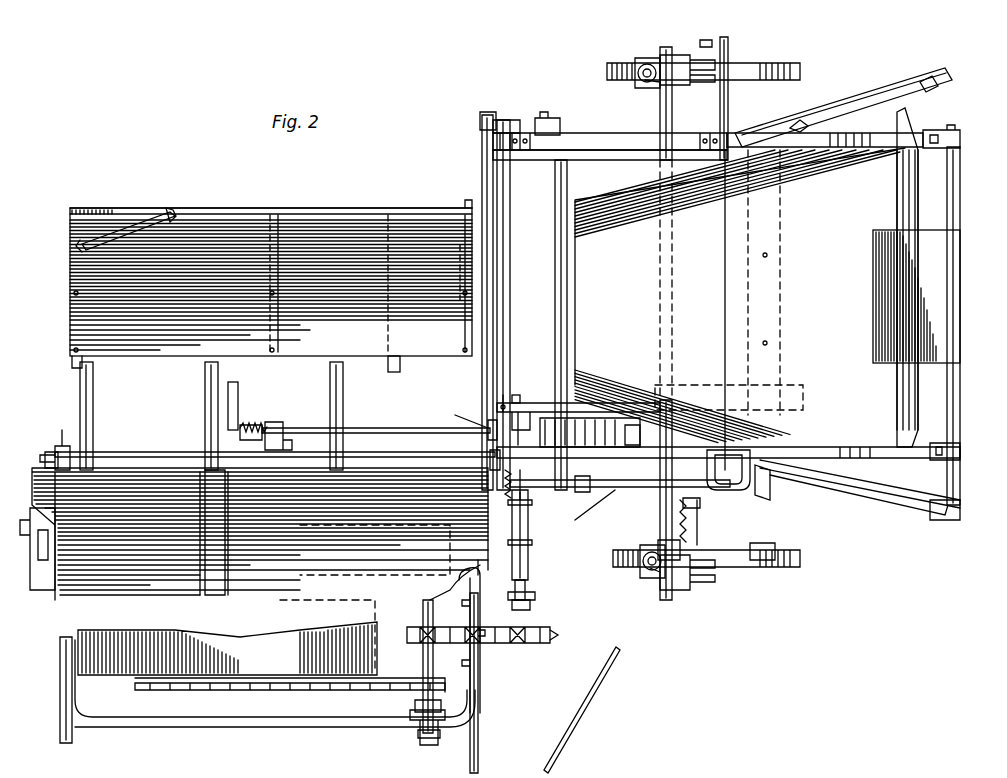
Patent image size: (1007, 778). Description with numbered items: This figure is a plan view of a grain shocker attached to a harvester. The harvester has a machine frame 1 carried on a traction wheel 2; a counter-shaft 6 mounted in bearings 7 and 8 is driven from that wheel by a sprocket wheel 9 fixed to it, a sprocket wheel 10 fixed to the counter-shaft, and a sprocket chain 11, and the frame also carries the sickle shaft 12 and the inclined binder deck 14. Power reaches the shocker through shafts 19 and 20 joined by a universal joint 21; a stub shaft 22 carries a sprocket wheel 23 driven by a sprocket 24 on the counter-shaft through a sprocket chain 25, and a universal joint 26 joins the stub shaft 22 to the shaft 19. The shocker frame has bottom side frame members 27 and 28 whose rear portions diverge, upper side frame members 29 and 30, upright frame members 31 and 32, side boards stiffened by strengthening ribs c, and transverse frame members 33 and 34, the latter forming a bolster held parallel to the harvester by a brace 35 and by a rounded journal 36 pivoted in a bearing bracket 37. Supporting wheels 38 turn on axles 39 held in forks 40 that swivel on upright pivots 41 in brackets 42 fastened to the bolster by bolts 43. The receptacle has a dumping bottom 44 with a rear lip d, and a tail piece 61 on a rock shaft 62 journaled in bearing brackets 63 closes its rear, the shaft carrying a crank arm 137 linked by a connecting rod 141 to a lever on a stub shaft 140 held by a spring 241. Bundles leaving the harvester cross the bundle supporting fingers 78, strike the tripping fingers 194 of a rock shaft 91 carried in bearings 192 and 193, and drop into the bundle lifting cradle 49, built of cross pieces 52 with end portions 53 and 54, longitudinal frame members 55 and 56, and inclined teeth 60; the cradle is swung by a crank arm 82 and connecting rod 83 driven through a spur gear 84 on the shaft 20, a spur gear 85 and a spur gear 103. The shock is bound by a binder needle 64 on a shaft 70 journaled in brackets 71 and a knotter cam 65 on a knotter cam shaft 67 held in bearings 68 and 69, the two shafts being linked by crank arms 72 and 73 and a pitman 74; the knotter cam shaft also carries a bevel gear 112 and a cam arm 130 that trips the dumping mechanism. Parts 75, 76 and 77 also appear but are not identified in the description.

The machine frame 1 is at (338, 727).
The traction wheel 2 is at (110, 676).
The counter-shaft 6 is at (450, 600).
The bearing 7 is at (412, 735).
The bearing 8 is at (410, 582).
The gear or sprocket wheel 9 is at (244, 427).
The gear or sprocket wheel 10 is at (478, 696).
The sprocket chain 11 is at (322, 692).
The sickle shaft 12 is at (216, 545).
The inclined binder deck 14 is at (32, 488).
The shaft 19 is at (528, 532).
The shaft 20 is at (518, 395).
The universal joint 21 is at (522, 495).
The stub shaft 22 is at (530, 604).
The sprocket wheel 23 is at (552, 642).
The sprocket 24 is at (423, 640).
The sprocket chain 25 is at (500, 643).
The universal joint 26 is at (535, 596).
The bottom side frame member 27 is at (778, 128).
The bottom side frame member 28 is at (400, 433).
The upper side frame member 29 is at (615, 133).
The upper side frame member 30 is at (712, 450).
The upright frame member 31 is at (748, 133).
The upright frame member 32 is at (808, 447).
The transverse frame member 33 is at (510, 312).
The transverse frame member 34 is at (672, 108).
The brace 35 is at (585, 718).
The rounded journal or bearing portion 36 is at (45, 458).
The bearing bracket or socket 37 is at (62, 446).
The supporting wheel 38 is at (755, 63).
The axle 39 is at (706, 40).
The fork 40 is at (685, 55).
The upright pivot 41 is at (640, 65).
The bracket 42 is at (640, 85).
The bolt 43 is at (700, 520).
The dumping bottom 44 is at (696, 296).
The bundle lifting cradle 49 is at (240, 208).
The cross piece 52 is at (70, 268).
The upwardly extending end portion 53 is at (278, 214).
The upwardly extending end portion 54 is at (72, 362).
The longitudinal frame member 55 is at (388, 362).
The longitudinal frame member 56 is at (212, 208).
The teeth 60 is at (555, 205).
The tail piece 61 is at (916, 296).
The transverse rock shaft 62 is at (960, 400).
The bearing bracket 63 is at (932, 130).
The shock binder arm or needle 64 is at (728, 45).
The knotter cam 65 is at (766, 497).
The knotter cam shaft 67 is at (600, 487).
The bearing 68 is at (775, 548).
The bearing 69 is at (578, 520).
The supporting and operating shaft 70 is at (590, 160).
The bearing or bracket 71 is at (515, 160).
The crank arm 72 is at (490, 458).
The crank arm 73 is at (487, 112).
The pitman or connecting rod 74 is at (482, 384).
The arm / post 75 is at (82, 246).
The lever 76 is at (170, 210).
The edge line 77 is at (725, 283).
The bundle supporting fingers or platform 78 is at (93, 385).
The crank arm 82 is at (552, 118).
The connecting rod 83 is at (515, 120).
The spur gear wheel 84 is at (525, 425).
The spur gear 85 is at (590, 432).
The rock shaft 91 is at (306, 430).
The spur gear wheel 103 is at (646, 433).
The bevel gear wheel 112 is at (469, 580).
The cam arm 130 is at (526, 585).
The crank arm 137 is at (938, 520).
The stub shaft or pivot 140 is at (672, 530).
The pitman or connecting rod 141 is at (850, 505).
The bearing 192 is at (262, 430).
The bearing 193 is at (488, 426).
The tripping finger 194 is at (248, 375).
The spring 241 is at (700, 505).
The strengthening rib c is at (800, 125).
The lip or flange d is at (918, 187).